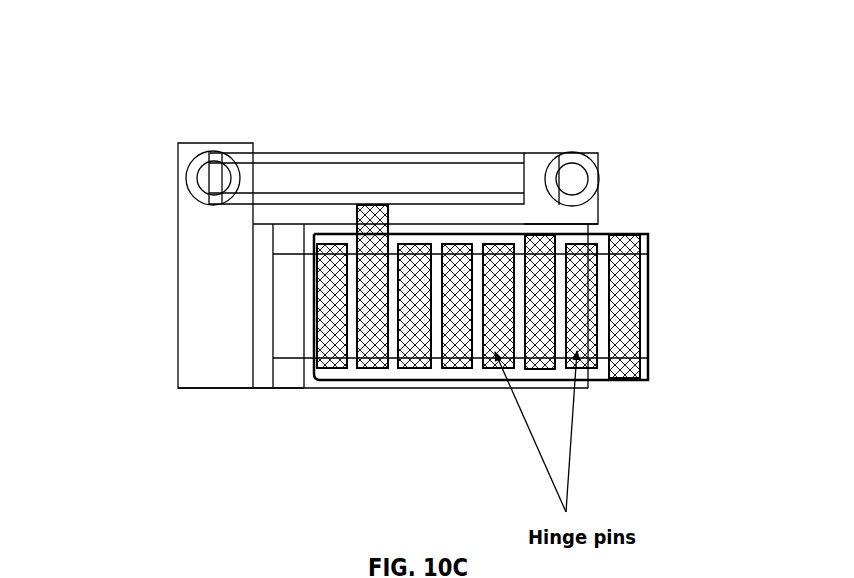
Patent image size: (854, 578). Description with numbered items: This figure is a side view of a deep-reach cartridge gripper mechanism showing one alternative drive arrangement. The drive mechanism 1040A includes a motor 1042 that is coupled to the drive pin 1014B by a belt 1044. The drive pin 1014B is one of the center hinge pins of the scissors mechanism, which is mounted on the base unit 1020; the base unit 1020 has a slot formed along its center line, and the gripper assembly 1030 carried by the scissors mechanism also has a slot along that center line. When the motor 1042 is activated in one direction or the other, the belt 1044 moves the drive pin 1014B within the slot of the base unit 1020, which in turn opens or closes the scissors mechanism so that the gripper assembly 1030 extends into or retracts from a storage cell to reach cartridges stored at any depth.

The drive mechanism 1040A is at (176, 118).
The motor 1042 is at (178, 184).
The belt 1044 is at (423, 159).
The gripper assembly 1030 is at (650, 233).
The base unit 1020 is at (282, 389).
The drive pin 1014B is at (368, 369).